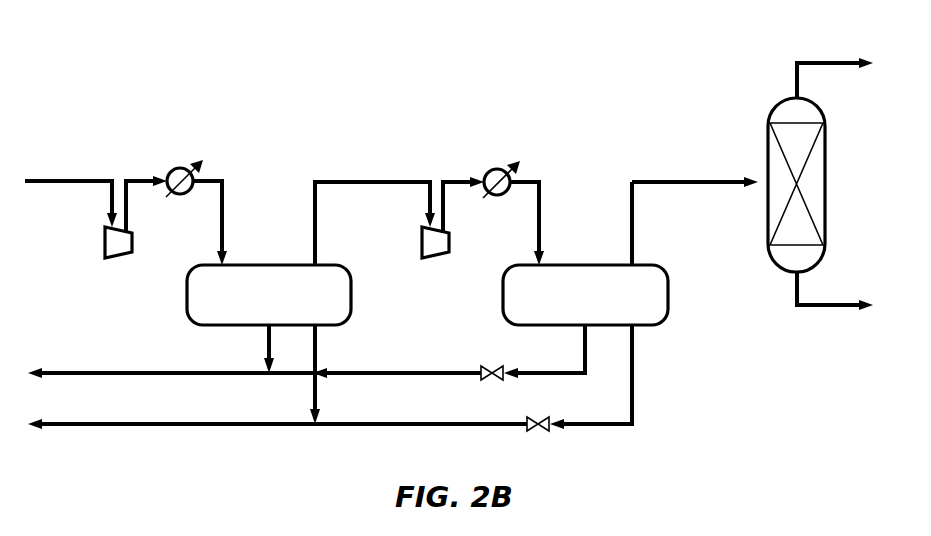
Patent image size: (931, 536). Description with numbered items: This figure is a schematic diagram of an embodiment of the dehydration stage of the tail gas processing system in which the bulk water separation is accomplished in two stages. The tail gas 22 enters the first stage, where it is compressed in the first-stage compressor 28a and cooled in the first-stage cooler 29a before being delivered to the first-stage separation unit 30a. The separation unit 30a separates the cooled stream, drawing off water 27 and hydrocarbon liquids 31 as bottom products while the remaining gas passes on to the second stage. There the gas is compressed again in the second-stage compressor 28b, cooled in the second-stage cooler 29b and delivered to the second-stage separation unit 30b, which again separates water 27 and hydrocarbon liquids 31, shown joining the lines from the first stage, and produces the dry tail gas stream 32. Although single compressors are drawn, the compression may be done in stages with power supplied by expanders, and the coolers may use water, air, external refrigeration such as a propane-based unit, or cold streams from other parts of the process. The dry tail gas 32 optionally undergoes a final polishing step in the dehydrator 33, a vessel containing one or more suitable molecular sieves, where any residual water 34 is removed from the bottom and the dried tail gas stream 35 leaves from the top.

The tail gas 22 is at (80, 181).
The first-stage compressor 28a is at (114, 258).
The first-stage cooler 29a is at (168, 171).
The first-stage separation unit 30a is at (258, 265).
The water 27 is at (128, 373).
The hydrocarbon liquids 31 is at (128, 424).
The second-stage compressor 28b is at (431, 258).
The second-stage cooler 29b is at (487, 172).
The second-stage separation unit 30b is at (573, 265).
The tail gas stream 32 is at (679, 182).
The dehydrator 33 is at (774, 104).
The tail gas stream 35 is at (823, 63).
The residual water 34 is at (823, 305).